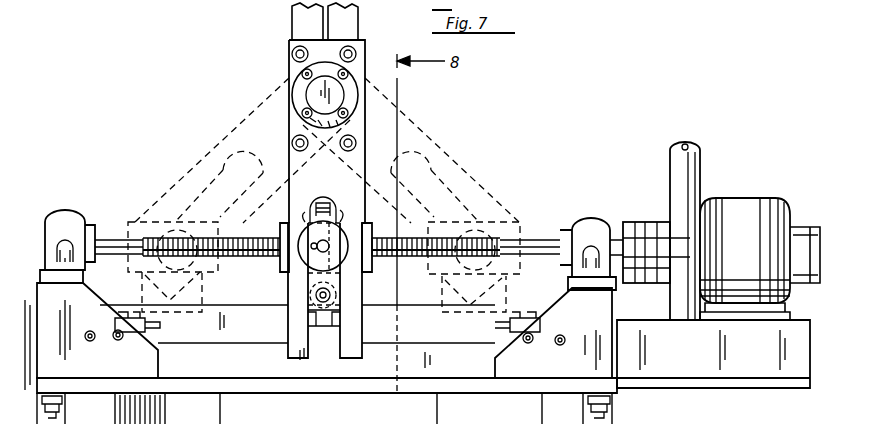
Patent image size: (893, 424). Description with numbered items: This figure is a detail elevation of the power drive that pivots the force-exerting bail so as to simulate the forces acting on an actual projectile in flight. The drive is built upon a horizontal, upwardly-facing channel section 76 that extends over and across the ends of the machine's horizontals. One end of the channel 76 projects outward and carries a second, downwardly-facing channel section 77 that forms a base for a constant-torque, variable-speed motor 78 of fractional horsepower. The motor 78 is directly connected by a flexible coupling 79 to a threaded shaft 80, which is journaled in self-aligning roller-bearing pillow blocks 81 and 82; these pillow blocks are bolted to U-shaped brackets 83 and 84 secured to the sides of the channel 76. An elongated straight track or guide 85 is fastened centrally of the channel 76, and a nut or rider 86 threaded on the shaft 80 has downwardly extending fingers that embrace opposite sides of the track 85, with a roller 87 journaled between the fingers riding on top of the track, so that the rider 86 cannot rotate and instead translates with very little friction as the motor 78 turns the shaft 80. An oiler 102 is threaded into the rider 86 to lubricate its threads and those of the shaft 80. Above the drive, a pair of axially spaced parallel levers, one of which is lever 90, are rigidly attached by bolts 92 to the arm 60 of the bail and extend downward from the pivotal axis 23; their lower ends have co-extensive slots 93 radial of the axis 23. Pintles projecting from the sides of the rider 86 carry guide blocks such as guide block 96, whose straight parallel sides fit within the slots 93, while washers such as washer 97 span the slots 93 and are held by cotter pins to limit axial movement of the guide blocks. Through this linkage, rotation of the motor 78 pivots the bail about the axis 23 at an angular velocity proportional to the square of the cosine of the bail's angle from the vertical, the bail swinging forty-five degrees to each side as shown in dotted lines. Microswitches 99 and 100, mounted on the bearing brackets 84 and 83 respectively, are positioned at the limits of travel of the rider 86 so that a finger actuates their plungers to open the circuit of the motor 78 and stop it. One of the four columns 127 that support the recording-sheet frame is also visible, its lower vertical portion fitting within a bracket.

The arm 60 is at (302, 18).
The axis 23 is at (336, 100).
The bolts 92 is at (356, 52).
The lever 90 is at (192, 180).
The oiler 102 is at (326, 200).
The guide block 96 is at (297, 207).
The washer 97 is at (350, 213).
The nut or rider 86 is at (316, 289).
The roller 87 is at (336, 296).
The slots 93 is at (331, 344).
The threaded shaft 80 is at (282, 258).
The pillow block 82 is at (72, 213).
The pillow block 81 is at (585, 224).
The flexible coupling 79 is at (641, 232).
The column 127 is at (700, 175).
The motor 78 is at (741, 205).
The downwardly-facing channel section 77 is at (732, 378).
The U-shaped bracket 84 is at (102, 372).
The U-shaped bracket 83 is at (522, 378).
The channel section 76 is at (272, 378).
The track or guide 85 is at (411, 314).
The microswitch 99 is at (118, 318).
The microswitch 100 is at (540, 316).